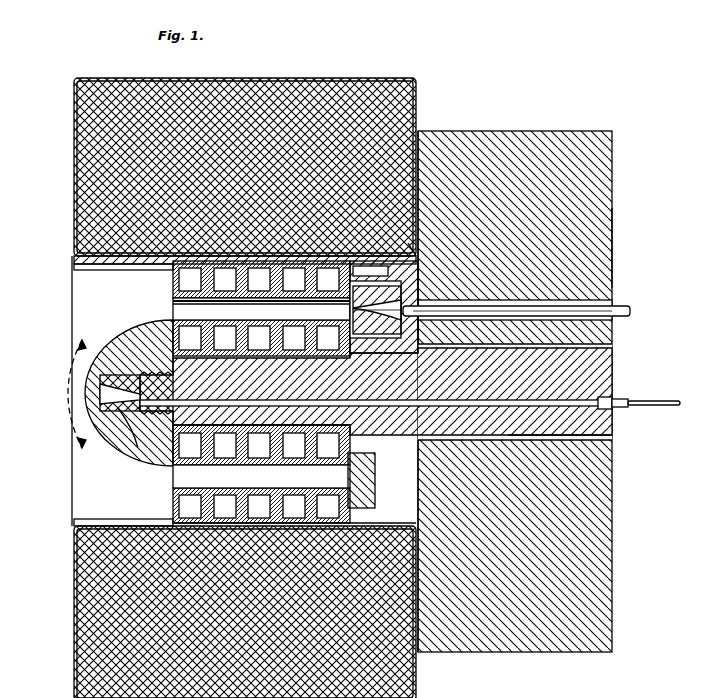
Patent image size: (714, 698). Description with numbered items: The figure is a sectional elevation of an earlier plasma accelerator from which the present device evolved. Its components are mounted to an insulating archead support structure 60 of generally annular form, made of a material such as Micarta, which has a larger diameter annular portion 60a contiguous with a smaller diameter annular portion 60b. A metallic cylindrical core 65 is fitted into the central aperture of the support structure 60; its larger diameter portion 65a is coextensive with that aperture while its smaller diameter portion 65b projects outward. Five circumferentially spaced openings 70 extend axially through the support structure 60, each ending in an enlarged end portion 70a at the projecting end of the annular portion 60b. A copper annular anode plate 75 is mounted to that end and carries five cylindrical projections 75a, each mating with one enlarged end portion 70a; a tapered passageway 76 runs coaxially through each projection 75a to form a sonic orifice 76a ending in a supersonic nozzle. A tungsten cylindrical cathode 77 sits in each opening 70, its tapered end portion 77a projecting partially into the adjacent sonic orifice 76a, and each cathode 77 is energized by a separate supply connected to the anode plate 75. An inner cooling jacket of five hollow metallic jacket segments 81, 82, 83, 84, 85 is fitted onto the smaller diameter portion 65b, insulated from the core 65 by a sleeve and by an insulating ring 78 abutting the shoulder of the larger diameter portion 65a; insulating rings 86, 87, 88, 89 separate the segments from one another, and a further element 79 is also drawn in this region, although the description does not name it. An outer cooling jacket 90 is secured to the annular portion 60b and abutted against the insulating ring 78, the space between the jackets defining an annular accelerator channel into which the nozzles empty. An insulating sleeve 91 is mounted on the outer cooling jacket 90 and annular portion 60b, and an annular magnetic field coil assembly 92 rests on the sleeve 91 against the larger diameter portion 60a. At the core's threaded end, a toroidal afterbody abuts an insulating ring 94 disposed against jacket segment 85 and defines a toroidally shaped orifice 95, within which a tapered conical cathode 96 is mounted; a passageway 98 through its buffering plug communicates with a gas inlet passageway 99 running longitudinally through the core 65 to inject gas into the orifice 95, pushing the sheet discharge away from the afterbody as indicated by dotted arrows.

The archead support structure 60 is at (606, 158).
The larger diameter annular portion 60a is at (590, 240).
The smaller diameter annular portion 60b is at (400, 246).
The cylindrical core 65 is at (588, 364).
The larger diameter portion 65a is at (598, 421).
The smaller diameter portion 65b is at (284, 376).
The openings 70 is at (609, 298).
The enlarged end portion 70a is at (410, 264).
The annular anode plate 75 is at (366, 472).
The cylindrical projections 75a is at (362, 288).
The passageways 76 is at (365, 326).
The sonic orifice 76a is at (390, 298).
The cylindrical cathode 77 is at (398, 308).
The tapered end portion 77a is at (388, 334).
The insulating ring 78 is at (345, 505).
The upper plate 79 is at (336, 348).
The jacket segment 81 is at (314, 325).
The jacket segment 82 is at (285, 320).
The jacket segment 83 is at (251, 320).
The jacket segment 84 is at (224, 320).
The jacket segment 85 is at (180, 318).
The insulating ring 86 is at (322, 424).
The insulating ring 87 is at (284, 425).
The insulating ring 88 is at (246, 425).
The insulating ring 89 is at (210, 425).
The outer cooling jacket 90 is at (158, 273).
The insulating sleeve 91 is at (80, 258).
The annular magnetic field coil assembly 92 is at (78, 152).
The insulating ring 94 is at (160, 430).
The orifice 95 is at (82, 386).
The tapered conical cathode 96 is at (100, 428).
The passageway 98 is at (118, 410).
The gas inlet passageway 99 is at (486, 394).